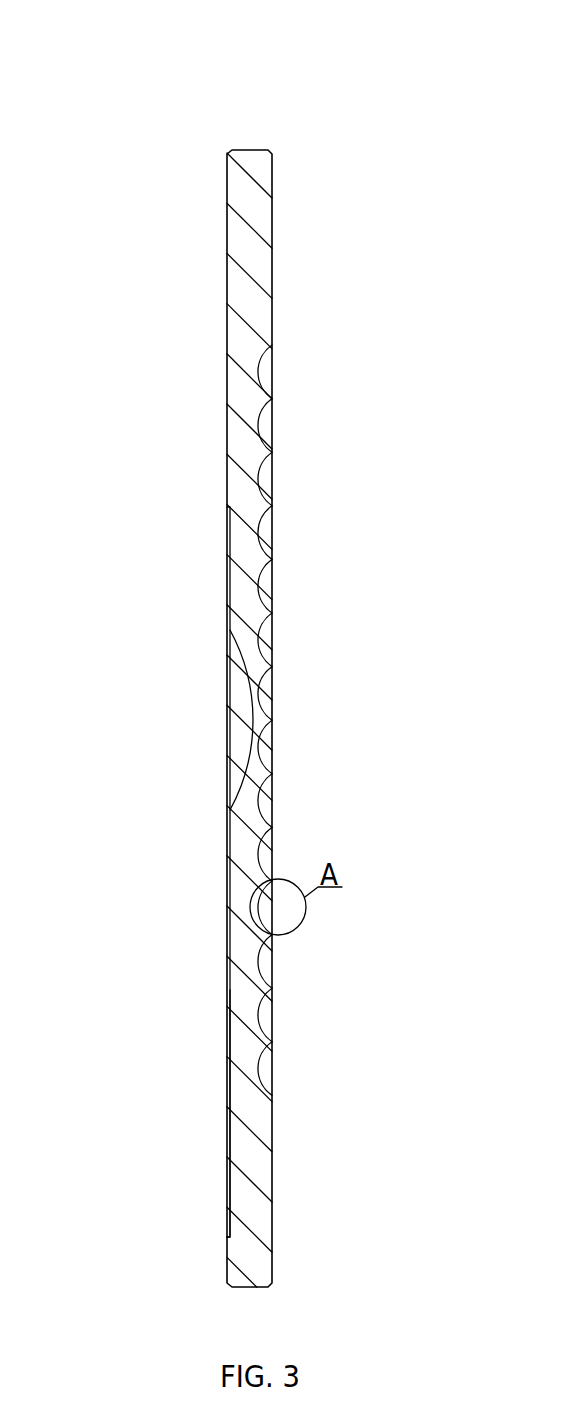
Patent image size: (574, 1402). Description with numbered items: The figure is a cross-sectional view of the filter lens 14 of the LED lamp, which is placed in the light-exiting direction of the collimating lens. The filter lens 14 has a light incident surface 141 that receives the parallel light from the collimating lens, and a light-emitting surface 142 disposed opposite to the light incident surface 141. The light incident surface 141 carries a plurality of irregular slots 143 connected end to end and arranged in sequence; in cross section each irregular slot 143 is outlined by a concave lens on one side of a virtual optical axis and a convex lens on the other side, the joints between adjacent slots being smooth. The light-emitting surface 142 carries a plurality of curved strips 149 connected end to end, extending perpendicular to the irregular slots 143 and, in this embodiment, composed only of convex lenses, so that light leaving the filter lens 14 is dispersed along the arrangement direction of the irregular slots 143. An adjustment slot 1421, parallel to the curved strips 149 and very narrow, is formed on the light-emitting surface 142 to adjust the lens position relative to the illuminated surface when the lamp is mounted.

The filter lens 14 is at (268, 51).
The light incident surface 141 is at (286, 578).
The light-emitting surface 142 is at (224, 548).
The adjustment slot 1421 is at (238, 723).
The irregular slot 143 is at (266, 752).
The curved strip 149 is at (230, 1036).